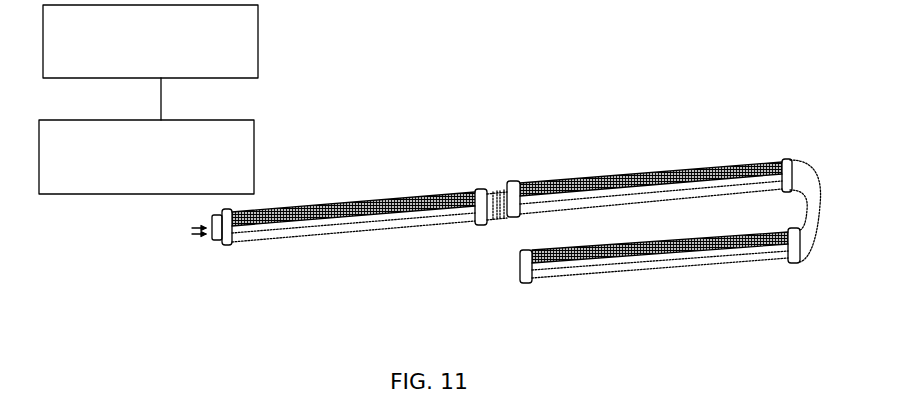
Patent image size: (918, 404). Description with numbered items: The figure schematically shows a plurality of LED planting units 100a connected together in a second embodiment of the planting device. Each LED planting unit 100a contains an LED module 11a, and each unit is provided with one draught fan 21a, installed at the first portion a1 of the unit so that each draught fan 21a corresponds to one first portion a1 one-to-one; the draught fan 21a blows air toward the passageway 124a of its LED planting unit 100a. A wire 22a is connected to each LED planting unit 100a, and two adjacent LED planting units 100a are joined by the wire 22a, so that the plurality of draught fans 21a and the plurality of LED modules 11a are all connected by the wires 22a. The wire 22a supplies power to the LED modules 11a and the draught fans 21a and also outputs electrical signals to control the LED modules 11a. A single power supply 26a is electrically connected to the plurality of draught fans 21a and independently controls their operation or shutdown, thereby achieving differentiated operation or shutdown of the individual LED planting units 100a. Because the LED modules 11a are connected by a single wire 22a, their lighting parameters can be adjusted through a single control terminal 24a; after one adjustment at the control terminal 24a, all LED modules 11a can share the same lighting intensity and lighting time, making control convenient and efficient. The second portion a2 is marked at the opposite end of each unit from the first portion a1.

The power supply 26a is at (150, 41).
The control terminal 24a is at (146, 157).
The LED planting unit 100a is at (353, 216).
The LED module 11a is at (378, 214).
The draught fan 21a is at (224, 246).
The wire 22a is at (215, 217).
The passageway 124a is at (190, 231).
The first portion a1 is at (236, 212).
The second end a2 is at (465, 185).